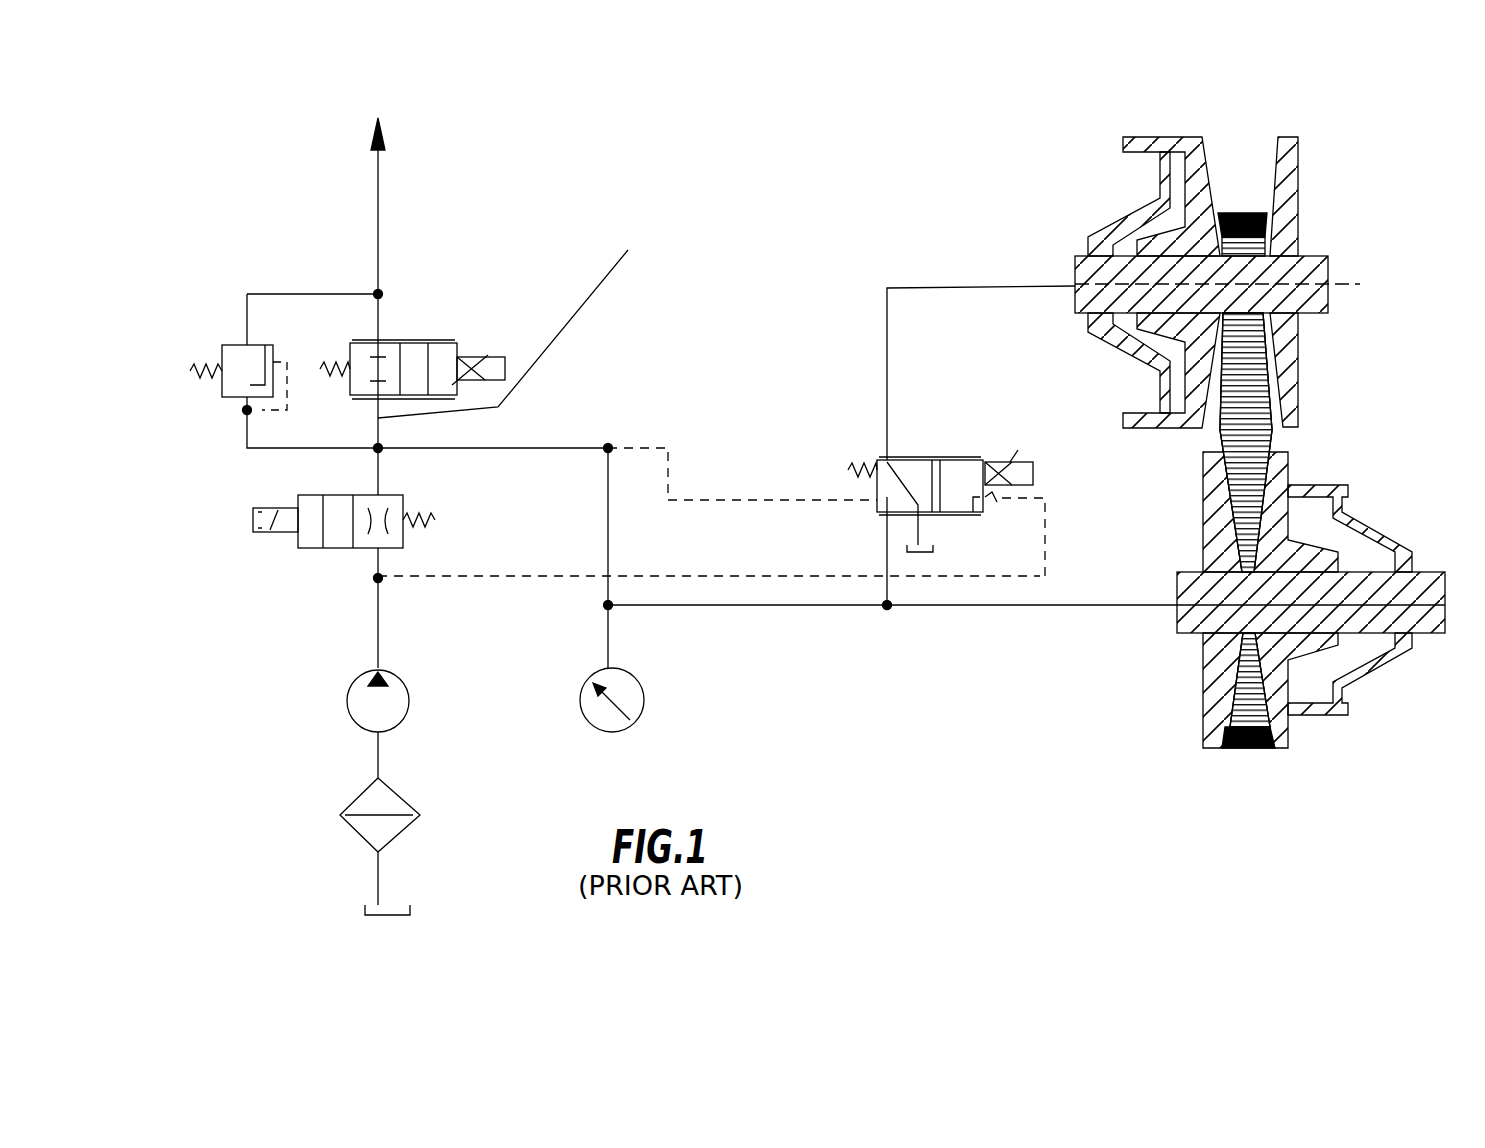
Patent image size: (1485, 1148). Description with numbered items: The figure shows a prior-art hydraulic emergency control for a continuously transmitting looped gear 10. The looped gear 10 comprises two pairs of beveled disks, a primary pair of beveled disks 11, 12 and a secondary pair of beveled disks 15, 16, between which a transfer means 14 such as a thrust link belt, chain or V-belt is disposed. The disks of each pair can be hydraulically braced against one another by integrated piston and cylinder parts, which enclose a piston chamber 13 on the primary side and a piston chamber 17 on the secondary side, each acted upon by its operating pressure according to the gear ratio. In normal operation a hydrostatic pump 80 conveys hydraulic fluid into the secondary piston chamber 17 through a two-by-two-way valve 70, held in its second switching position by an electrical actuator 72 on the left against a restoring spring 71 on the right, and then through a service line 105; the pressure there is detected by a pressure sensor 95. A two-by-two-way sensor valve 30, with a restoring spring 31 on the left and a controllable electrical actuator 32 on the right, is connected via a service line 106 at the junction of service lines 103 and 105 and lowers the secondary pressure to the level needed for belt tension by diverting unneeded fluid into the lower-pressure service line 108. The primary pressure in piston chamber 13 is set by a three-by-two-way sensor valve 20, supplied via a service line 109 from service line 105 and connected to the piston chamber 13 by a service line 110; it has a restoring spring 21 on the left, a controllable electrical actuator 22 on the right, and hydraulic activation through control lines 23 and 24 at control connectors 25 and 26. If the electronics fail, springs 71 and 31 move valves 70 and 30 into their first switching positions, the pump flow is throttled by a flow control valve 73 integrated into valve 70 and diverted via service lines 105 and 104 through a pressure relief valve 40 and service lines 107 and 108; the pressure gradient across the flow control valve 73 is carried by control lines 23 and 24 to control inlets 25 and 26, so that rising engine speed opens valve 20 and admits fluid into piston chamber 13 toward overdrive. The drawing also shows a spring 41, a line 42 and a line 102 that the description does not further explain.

The looped gear 10 is at (1352, 418).
The beveled disk 11 is at (1290, 153).
The beveled disk 12 is at (1205, 242).
The piston chamber 13 is at (1177, 208).
The transfer means 14 is at (1265, 437).
The beveled disk 15 is at (1280, 667).
The beveled disk 16 is at (1215, 710).
The piston chamber 17 is at (1342, 538).
The 3/2-way sensor valve 20 is at (955, 503).
The restoring spring 21 is at (857, 463).
The electrical actuator 22 is at (1033, 482).
The control line 23 is at (672, 480).
The control line 24 is at (1038, 577).
The control connector 25 is at (873, 497).
The control connector 26 is at (997, 502).
The 2/2-way sensor valve 30 is at (447, 353).
The restoring spring 31 is at (322, 372).
The electrical actuator 32 is at (495, 363).
The pressure relief valve 40 is at (237, 352).
The spring 41 is at (190, 360).
The pilot line 42 is at (253, 422).
The 2/2-way valve 70 is at (310, 540).
The restoring spring 71 is at (435, 520).
The electrical actuator 72 is at (253, 525).
The flow control valve 73 is at (388, 530).
The hydrostatic pump 80 is at (397, 703).
The pressure sensor 95 is at (590, 698).
The hydraulic line 102 is at (383, 640).
The service line 103 is at (378, 462).
The service line 104 is at (247, 447).
The service line 105 is at (523, 448).
The service line 106 is at (522, 316).
The service line 107 is at (333, 294).
The service line 108 is at (378, 264).
The service line 109 is at (887, 588).
The service line 110 is at (887, 355).